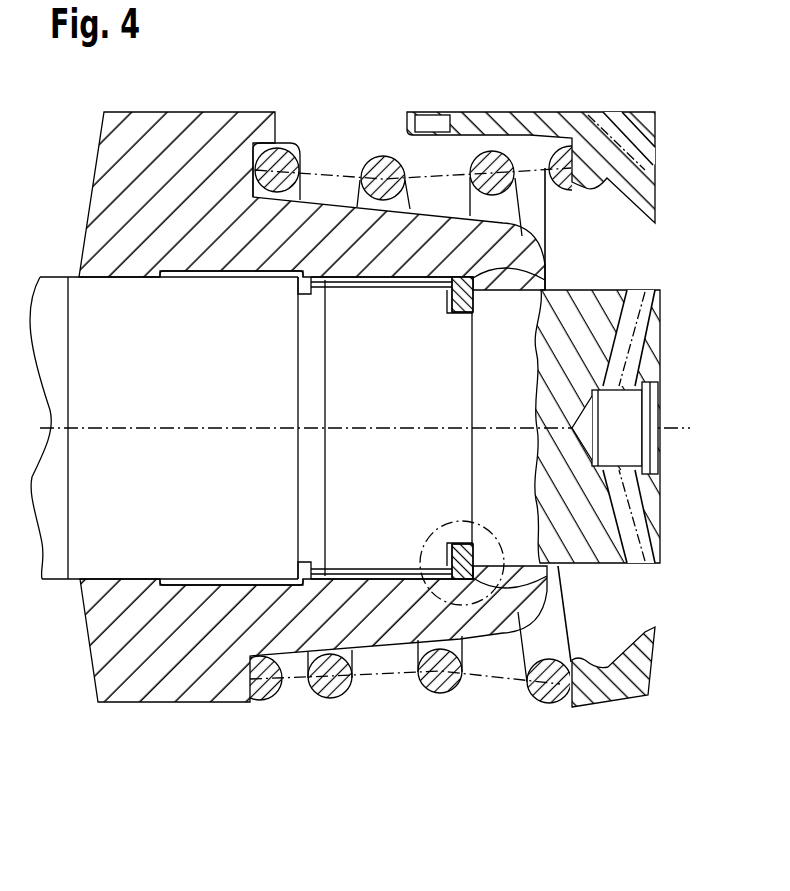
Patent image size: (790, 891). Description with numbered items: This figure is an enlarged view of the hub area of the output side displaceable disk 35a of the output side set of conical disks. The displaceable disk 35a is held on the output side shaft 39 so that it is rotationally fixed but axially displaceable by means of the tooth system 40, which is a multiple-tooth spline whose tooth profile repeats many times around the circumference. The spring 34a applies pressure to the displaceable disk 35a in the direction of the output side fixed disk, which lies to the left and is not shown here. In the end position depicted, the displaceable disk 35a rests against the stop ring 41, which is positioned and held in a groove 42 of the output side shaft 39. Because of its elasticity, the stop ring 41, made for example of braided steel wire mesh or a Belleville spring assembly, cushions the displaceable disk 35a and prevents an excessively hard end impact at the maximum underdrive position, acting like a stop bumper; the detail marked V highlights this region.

The output side shaft 39 is at (187, 503).
The output side displaceable disk 35a is at (197, 692).
The spring 34a is at (330, 698).
The tooth system 40 is at (383, 580).
The stop ring 41 is at (540, 268).
The groove 42 is at (450, 303).
The detail V is at (497, 583).